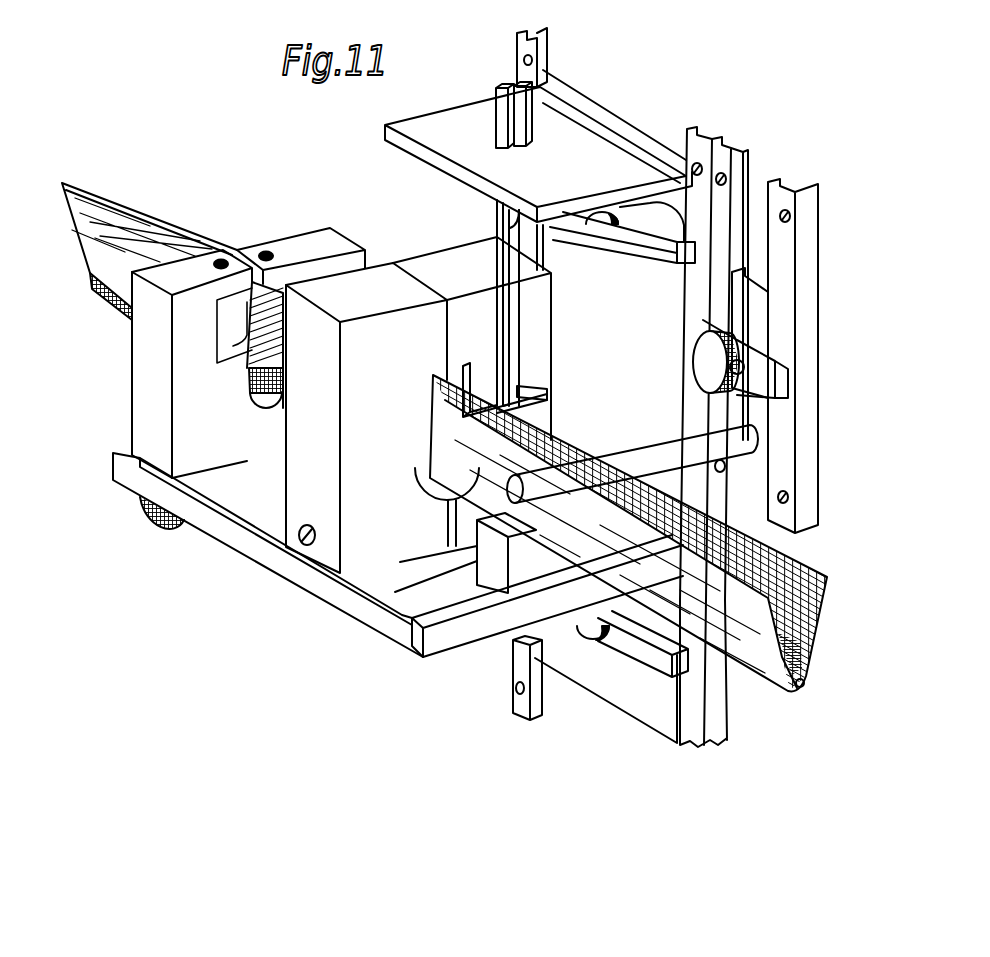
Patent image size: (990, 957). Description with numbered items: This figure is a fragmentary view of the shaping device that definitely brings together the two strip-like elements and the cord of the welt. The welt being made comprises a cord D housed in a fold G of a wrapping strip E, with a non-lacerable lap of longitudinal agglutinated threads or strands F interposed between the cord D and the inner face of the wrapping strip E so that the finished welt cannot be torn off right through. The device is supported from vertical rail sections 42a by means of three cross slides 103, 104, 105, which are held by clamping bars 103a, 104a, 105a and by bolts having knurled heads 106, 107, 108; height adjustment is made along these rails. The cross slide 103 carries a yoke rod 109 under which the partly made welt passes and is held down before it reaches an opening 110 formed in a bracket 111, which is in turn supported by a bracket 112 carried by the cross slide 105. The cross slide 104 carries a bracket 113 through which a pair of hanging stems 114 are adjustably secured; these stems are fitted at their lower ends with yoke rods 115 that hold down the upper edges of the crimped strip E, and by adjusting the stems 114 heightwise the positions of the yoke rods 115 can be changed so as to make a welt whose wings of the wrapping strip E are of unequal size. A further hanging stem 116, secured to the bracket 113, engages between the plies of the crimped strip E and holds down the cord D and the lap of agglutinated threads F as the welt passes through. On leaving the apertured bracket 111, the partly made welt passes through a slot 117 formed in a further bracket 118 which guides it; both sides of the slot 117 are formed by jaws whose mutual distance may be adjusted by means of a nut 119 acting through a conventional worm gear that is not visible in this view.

The bracket 113 is at (450, 133).
The hanging stems 114 is at (517, 92).
The vertical rail sections 42a is at (547, 50).
The cross slide 104 is at (598, 102).
The knurled head 107 is at (602, 218).
The clamping bar 104a is at (660, 230).
The cross slide 103 is at (752, 315).
The knurled head 106 is at (705, 370).
The clamping bar 103a is at (770, 382).
The yoke rod 109 is at (743, 442).
The clamping bar 105a is at (680, 683).
The cross slide 105 is at (645, 702).
The knurled head 108 is at (582, 640).
The opening 110 is at (440, 505).
The bracket 112 is at (353, 592).
The bracket 111 is at (383, 487).
The nut 119 is at (158, 528).
The bracket 118 is at (152, 372).
The slot 117 is at (238, 250).
The hanging stem 116 is at (517, 317).
The yoke rods 115 is at (475, 403).
The wrapping strip E is at (72, 222).
The agglutinated threads or strands F is at (800, 650).
The cord D is at (808, 683).
The fold G is at (97, 290).